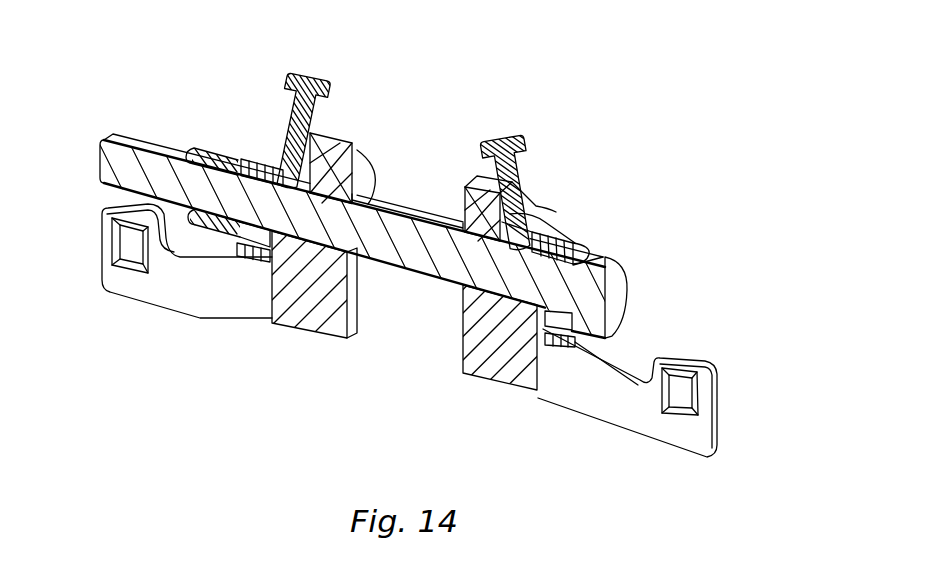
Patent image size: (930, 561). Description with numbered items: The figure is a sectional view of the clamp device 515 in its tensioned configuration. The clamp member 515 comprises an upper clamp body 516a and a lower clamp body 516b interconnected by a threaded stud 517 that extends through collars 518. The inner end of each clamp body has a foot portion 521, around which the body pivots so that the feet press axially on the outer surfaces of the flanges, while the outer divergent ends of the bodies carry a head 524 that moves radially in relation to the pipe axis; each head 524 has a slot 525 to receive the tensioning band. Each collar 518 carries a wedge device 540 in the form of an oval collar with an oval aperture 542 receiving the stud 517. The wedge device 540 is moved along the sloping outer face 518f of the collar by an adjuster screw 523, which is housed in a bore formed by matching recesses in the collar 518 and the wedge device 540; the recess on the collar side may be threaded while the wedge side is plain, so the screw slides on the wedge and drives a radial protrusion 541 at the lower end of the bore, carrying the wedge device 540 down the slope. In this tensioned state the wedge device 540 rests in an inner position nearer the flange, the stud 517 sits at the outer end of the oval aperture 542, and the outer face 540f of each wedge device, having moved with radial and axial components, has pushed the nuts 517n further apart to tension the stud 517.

The clamp member 515 is at (415, 270).
The upper clamp body 516a is at (187, 303).
The lower clamp body 516b is at (626, 415).
The threaded stud 517 is at (117, 153).
The nut 517n is at (213, 145).
The collar 518 is at (313, 310).
The sloping outer face of the collar 518f is at (543, 216).
The foot portion 521 is at (351, 328).
The adjuster screw 523 is at (312, 82).
The head 524 is at (379, 365).
The slot 525 is at (132, 243).
The wedge device 540 is at (260, 150).
The outer face of the wedge device 540f is at (590, 247).
The radial protrusion 541 is at (465, 214).
The oval aperture 542 is at (255, 240).